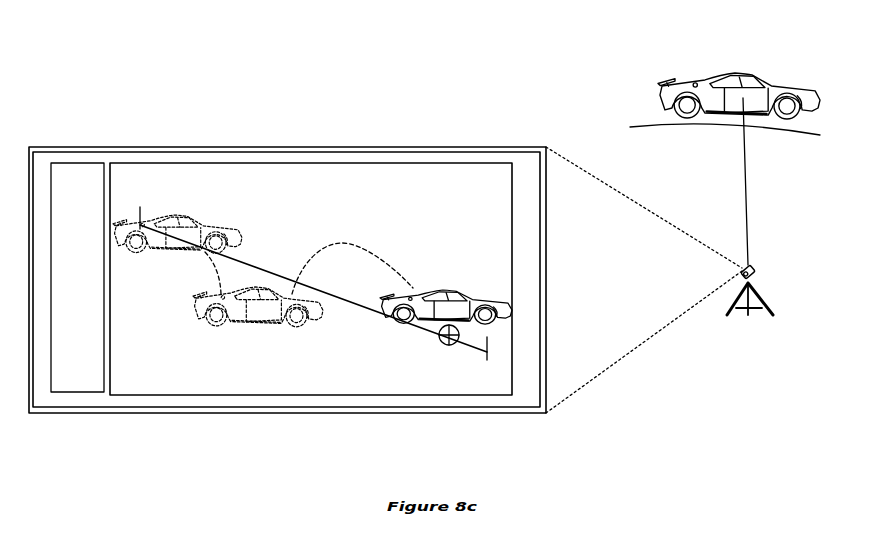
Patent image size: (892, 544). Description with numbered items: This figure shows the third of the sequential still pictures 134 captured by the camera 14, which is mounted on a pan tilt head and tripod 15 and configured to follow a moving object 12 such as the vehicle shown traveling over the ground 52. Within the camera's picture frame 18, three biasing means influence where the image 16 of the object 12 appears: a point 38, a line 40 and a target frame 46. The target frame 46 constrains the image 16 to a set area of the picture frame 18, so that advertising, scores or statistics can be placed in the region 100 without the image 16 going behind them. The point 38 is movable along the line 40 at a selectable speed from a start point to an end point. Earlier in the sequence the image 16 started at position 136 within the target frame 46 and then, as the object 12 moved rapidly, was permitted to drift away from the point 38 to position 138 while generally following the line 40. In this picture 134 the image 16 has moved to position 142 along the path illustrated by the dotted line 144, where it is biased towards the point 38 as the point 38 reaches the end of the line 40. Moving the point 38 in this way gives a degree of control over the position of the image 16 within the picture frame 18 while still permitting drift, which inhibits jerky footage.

The still picture 134 is at (137, 118).
The camera's picture frame 18 is at (247, 148).
The target frame 46 is at (492, 163).
The region 100 is at (92, 282).
The position 136 is at (206, 218).
The position 138 is at (258, 335).
The line 40 is at (258, 262).
The dotted line 144 is at (352, 237).
The image 16 is at (448, 290).
The position 142 is at (473, 290).
The point 38 is at (441, 342).
The moving object 12 is at (738, 72).
The ground surface 52 is at (705, 128).
The camera 14 is at (755, 270).
The tripod 15 is at (767, 298).